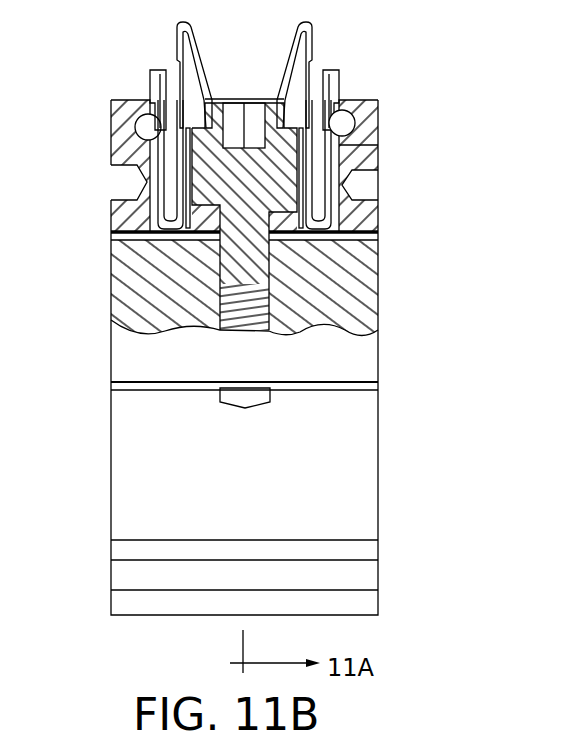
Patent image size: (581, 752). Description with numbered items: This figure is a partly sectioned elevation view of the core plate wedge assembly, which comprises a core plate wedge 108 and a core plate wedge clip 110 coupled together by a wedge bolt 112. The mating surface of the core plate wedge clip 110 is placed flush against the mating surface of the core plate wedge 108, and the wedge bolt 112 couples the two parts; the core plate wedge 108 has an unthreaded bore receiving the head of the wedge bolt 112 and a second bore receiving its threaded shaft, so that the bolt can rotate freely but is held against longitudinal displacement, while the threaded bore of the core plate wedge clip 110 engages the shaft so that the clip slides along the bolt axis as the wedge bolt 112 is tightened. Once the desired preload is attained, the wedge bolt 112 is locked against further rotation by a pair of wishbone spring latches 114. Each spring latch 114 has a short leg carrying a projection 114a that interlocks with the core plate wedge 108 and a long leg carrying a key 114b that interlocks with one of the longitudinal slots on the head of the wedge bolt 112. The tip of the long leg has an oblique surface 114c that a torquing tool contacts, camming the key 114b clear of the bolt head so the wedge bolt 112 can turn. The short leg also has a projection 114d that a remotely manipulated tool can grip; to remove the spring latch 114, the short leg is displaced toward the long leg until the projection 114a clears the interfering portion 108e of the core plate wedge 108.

The core plate wedge 108 is at (243, 166).
The interfering portion 108e is at (374, 158).
The core plate wedge clip 110 is at (99, 452).
The wedge bolt 112 is at (199, 199).
The wishbone spring latch 114 is at (285, 114).
The projection 114a is at (380, 134).
The key 114b is at (284, 100).
The oblique surface 114c is at (291, 52).
The projection 114d is at (342, 80).